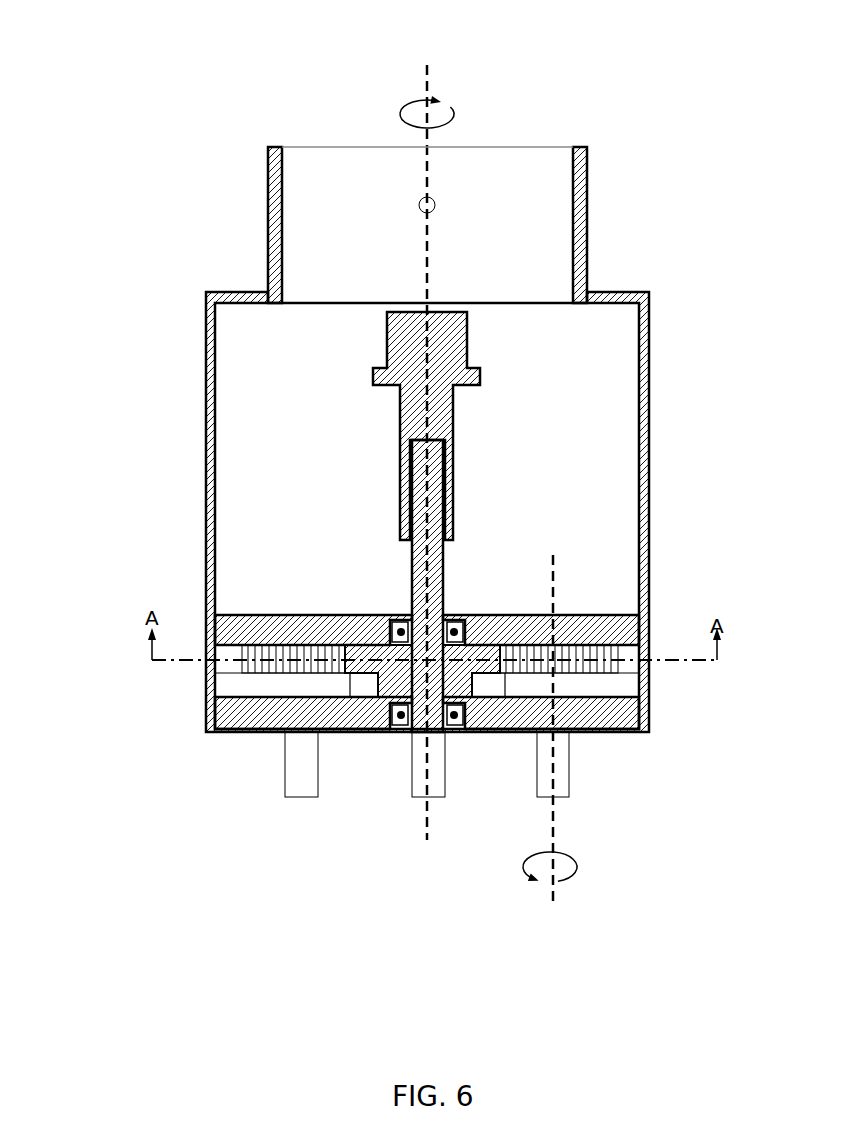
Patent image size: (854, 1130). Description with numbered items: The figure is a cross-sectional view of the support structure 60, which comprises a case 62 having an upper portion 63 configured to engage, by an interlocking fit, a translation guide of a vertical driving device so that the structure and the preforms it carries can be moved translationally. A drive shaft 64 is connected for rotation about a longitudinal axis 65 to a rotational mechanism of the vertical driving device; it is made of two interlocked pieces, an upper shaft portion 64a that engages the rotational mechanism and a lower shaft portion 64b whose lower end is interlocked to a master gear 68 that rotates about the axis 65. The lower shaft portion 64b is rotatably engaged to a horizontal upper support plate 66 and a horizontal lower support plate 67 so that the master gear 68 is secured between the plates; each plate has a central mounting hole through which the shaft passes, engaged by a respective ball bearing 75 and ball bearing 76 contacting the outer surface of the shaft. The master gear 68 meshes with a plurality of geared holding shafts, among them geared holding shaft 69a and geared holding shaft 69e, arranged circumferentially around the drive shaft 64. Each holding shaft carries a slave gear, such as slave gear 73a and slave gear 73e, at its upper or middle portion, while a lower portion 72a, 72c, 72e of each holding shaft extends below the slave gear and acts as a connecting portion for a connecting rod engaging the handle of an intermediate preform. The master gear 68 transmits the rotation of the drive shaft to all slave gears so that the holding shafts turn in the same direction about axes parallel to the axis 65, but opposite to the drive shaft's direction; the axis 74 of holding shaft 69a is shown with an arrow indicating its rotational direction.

The support structure 60 is at (634, 161).
The case 62 is at (200, 341).
The upper portion 63 is at (266, 203).
The drive shaft 64 is at (480, 347).
The upper shaft portion 64a is at (452, 415).
The lower shaft portion 64b is at (445, 572).
The longitudinal axis 65 is at (432, 70).
The upper support plate 66 is at (607, 621).
The lower support plate 67 is at (225, 732).
The master gear 68 is at (365, 660).
The geared holding shaft 69a is at (650, 716).
The geared holding shaft 69e is at (215, 700).
The lower portion of holding shaft 72a is at (562, 780).
The lower portion of holding shaft 72c is at (418, 780).
The lower portion of holding shaft 72e is at (295, 780).
The slave gear 73a is at (596, 684).
The slave gear 73e is at (270, 688).
The axis of geared holding shaft 74 is at (557, 893).
The ball bearing 75 is at (398, 618).
The ball bearing 76 is at (397, 723).